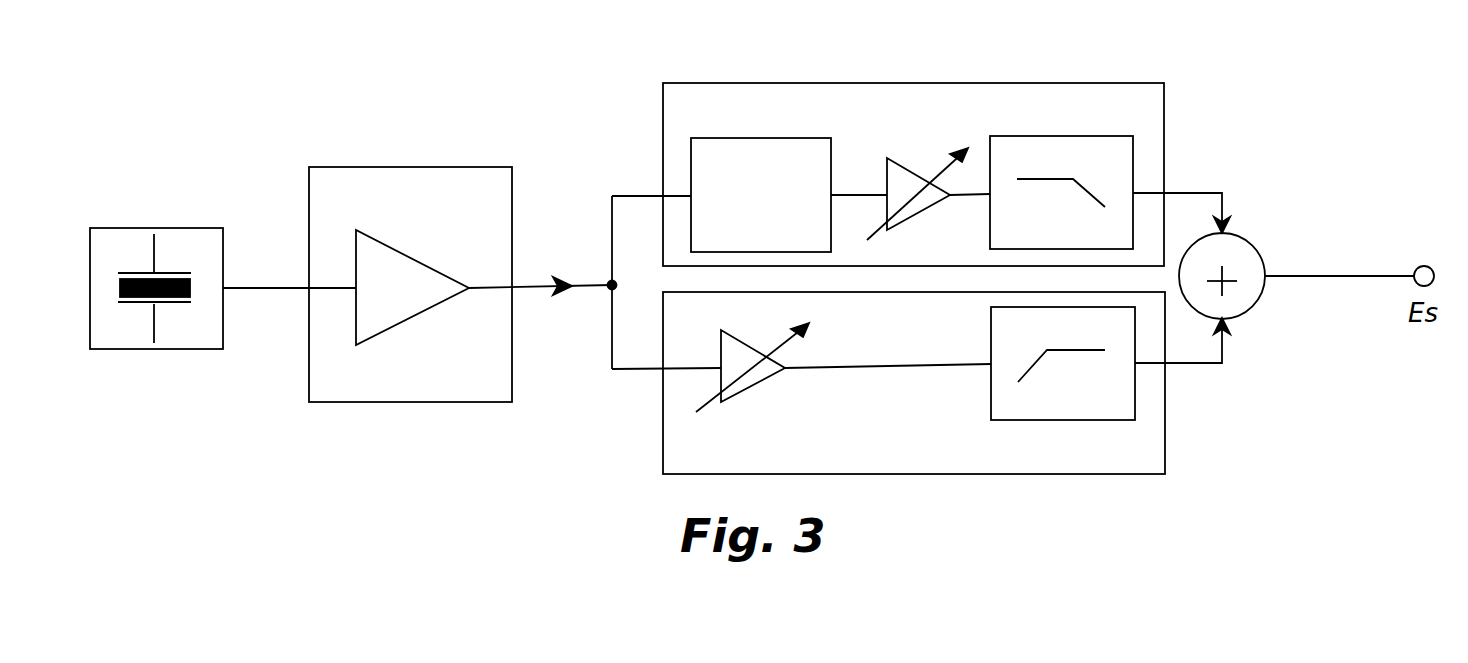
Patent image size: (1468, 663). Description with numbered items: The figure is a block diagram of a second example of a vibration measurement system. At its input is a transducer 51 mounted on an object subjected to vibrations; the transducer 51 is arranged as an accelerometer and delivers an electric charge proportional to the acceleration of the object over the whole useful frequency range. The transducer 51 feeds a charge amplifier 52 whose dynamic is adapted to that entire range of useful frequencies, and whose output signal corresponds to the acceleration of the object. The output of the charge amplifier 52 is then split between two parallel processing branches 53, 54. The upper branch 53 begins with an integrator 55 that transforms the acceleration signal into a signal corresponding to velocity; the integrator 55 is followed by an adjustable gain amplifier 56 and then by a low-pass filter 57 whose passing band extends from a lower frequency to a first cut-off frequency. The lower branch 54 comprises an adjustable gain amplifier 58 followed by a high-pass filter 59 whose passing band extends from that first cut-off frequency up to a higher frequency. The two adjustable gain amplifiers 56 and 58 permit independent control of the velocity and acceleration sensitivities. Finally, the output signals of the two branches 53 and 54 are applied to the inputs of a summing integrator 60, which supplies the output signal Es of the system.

The transducer 51 is at (118, 228).
The charge amplifier 52 is at (375, 167).
The branch 53 is at (890, 83).
The branch 54 is at (1010, 474).
The integrator 55 is at (725, 138).
The adjustable gain amplifier 56 is at (908, 165).
The low-pass filter 57 is at (1032, 136).
The adjustable gain amplifier 58 is at (743, 392).
The high-pass filter 59 is at (1097, 420).
The summing integrator 60 is at (1243, 317).